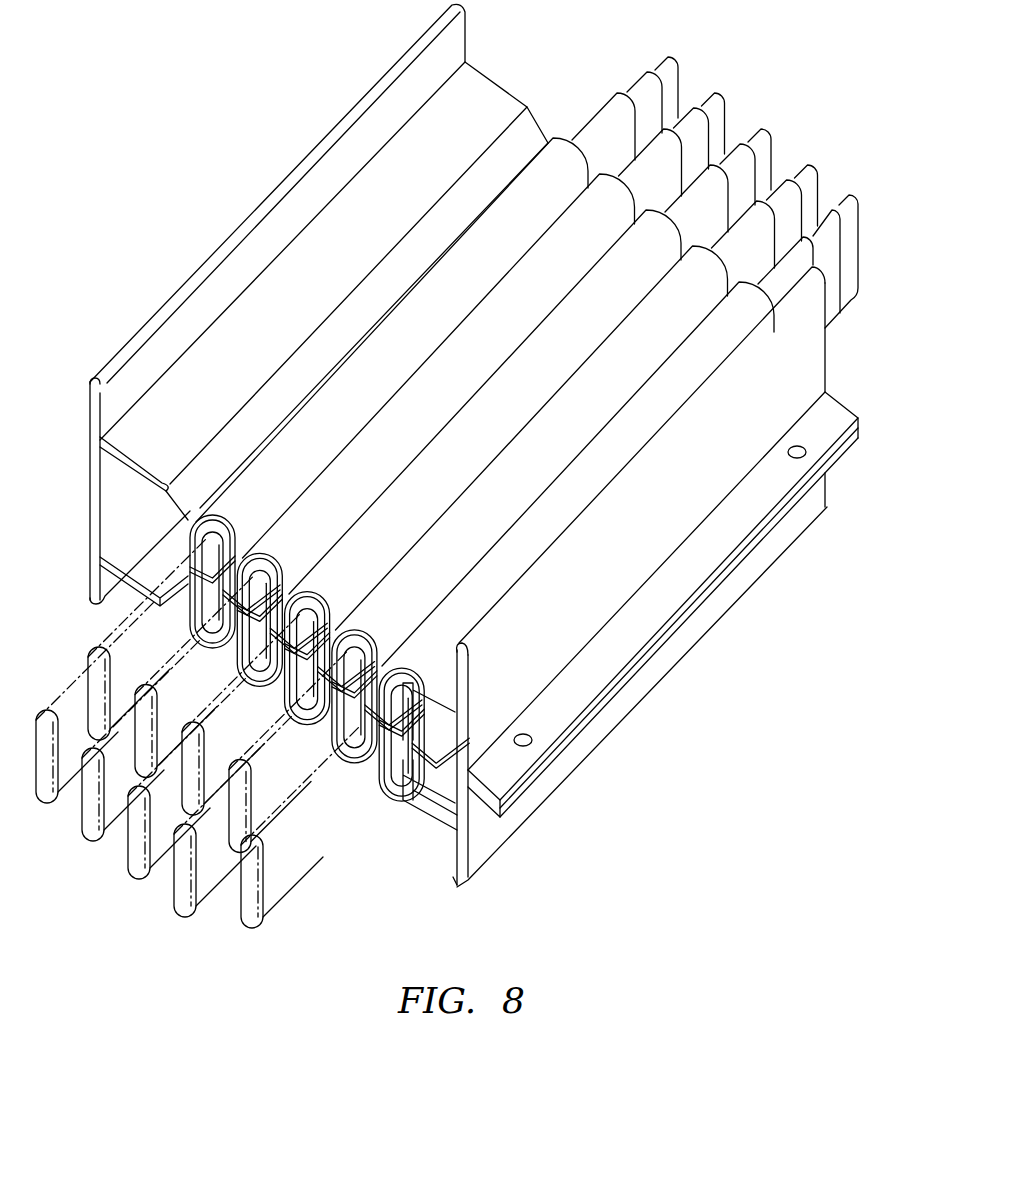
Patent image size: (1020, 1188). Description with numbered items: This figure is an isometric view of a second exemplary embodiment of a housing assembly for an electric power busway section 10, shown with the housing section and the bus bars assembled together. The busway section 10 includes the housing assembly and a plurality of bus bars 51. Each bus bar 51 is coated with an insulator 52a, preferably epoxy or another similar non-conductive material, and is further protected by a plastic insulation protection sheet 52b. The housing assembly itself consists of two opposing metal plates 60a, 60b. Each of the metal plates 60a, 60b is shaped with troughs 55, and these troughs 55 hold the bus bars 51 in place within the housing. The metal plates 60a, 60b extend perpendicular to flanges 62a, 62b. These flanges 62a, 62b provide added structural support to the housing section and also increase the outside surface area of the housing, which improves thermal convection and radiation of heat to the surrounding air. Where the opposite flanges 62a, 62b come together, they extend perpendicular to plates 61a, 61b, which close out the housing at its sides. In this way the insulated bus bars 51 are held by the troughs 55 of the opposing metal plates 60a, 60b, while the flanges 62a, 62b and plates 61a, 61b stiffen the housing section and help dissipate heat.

The electric power busway section 10 is at (174, 186).
The bus bars 51 is at (684, 62).
The insulator 52a is at (636, 85).
The plastic insulation protection sheet 52b is at (598, 118).
The troughs 55 is at (356, 765).
The metal plate 60a is at (416, 812).
The metal plate 60b is at (410, 682).
The plate 61a is at (486, 812).
The plate 61b is at (844, 400).
The flange 62a is at (606, 727).
The flange 62b is at (600, 560).